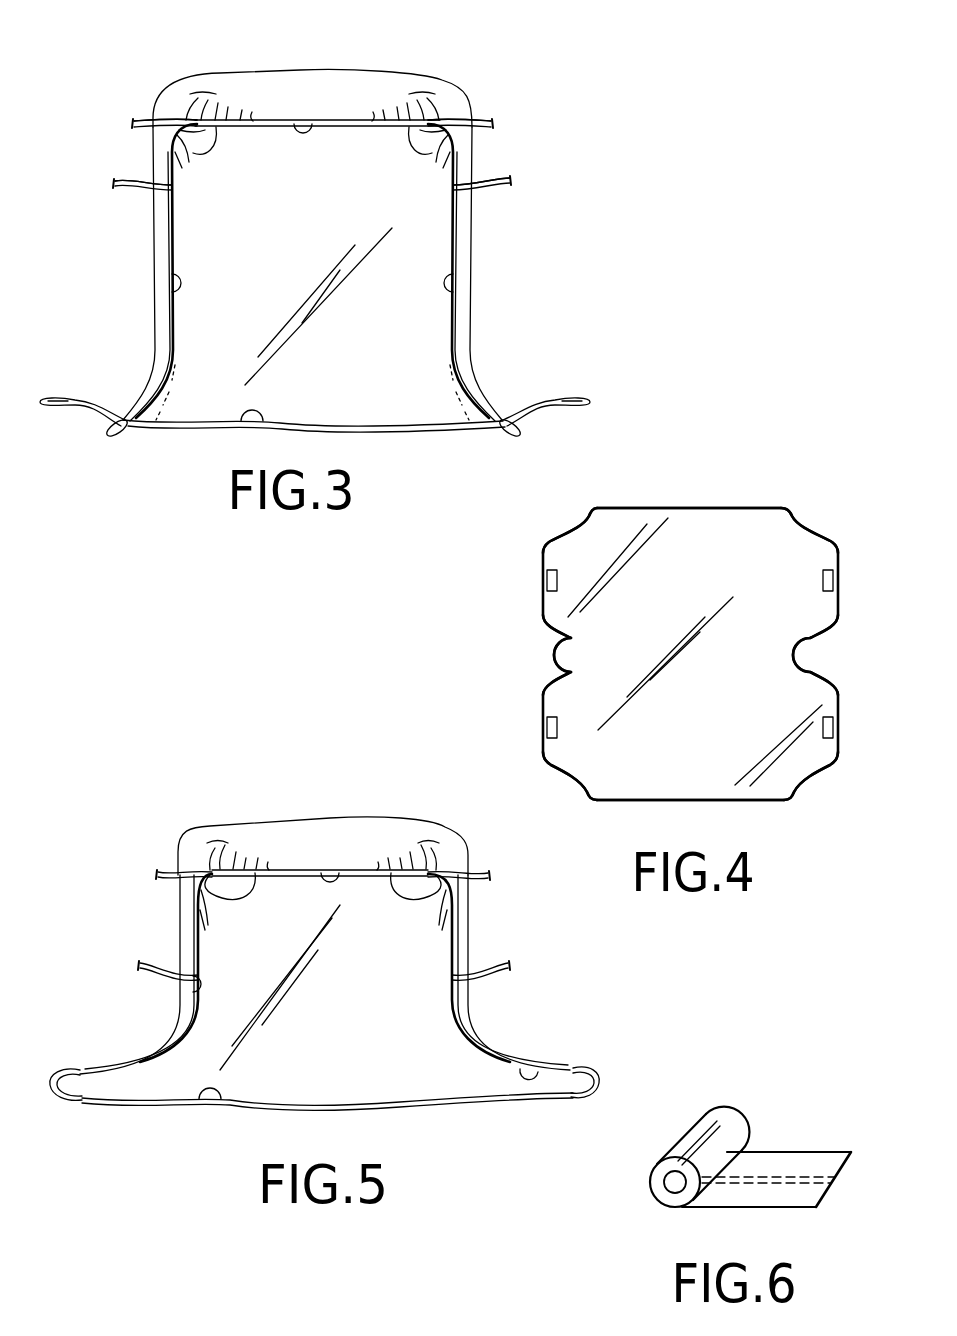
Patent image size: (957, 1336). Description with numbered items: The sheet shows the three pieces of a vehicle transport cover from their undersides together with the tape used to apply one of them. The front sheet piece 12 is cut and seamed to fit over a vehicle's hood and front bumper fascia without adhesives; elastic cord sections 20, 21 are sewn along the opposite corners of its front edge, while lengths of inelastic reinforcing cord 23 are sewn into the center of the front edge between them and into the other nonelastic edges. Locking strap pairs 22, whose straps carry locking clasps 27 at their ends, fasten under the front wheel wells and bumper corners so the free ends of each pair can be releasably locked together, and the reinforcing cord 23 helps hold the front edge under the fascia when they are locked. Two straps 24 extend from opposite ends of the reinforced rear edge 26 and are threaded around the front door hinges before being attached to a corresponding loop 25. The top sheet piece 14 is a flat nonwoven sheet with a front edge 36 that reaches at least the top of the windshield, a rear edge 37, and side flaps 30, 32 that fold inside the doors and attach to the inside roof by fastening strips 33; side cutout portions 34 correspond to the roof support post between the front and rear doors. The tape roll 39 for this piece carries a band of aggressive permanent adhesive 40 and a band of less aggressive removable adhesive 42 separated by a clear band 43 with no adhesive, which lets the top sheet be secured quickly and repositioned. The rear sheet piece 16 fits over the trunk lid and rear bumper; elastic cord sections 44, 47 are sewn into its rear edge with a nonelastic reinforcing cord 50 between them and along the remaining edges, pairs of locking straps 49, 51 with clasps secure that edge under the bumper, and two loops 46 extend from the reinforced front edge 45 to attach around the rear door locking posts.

In FIG. 3, the front sheet piece 12 is at (304, 362).
In FIG. 4, the top sheet piece 14 is at (710, 704).
In FIG. 5, the rear sheet piece 16 is at (312, 1003).
In FIG. 3, the elastic cord section 20 is at (212, 132).
In FIG. 3, the elastic cord section 21 is at (437, 130).
In FIG. 3, the locking strap pairs 22 is at (134, 127).
In FIG. 3, the inelastic reinforcing cord 23 is at (298, 119).
In FIG. 3, the straps 24 is at (92, 398).
In FIG. 3, the loop 25 is at (110, 436).
In FIG. 3, the rear edge 26 is at (360, 428).
In FIG. 3, the locking clasps 27 is at (133, 120).
In FIG. 4, the side flap 30 is at (553, 755).
In FIG. 4, the side flap 32 is at (553, 550).
In FIG. 4, the fastening strips 33 is at (547, 580).
In FIG. 4, the side cutout portions 34 is at (588, 653).
In FIG. 4, the front edge 36 is at (690, 800).
In FIG. 4, the rear edge 37 is at (700, 507).
In FIG. 6, the tape roll 39 is at (709, 1114).
In FIG. 6, the band of aggressive permanent adhesive 40 is at (765, 1158).
In FIG. 6, the band of less aggressive removable adhesive 42 is at (778, 1198).
In FIG. 6, the clear band 43 is at (846, 1178).
In FIG. 5, the elastic cord section 44 is at (258, 880).
In FIG. 5, the front edge 45 is at (335, 1105).
In FIG. 5, the loops 46 is at (72, 1068).
In FIG. 5, the elastic cord section 47 is at (400, 870).
In FIG. 5, the locking strap pair 49 is at (170, 876).
In FIG. 5, the nonelastic reinforcing cord 50 is at (330, 866).
In FIG. 5, the locking strap pair 51 is at (478, 877).